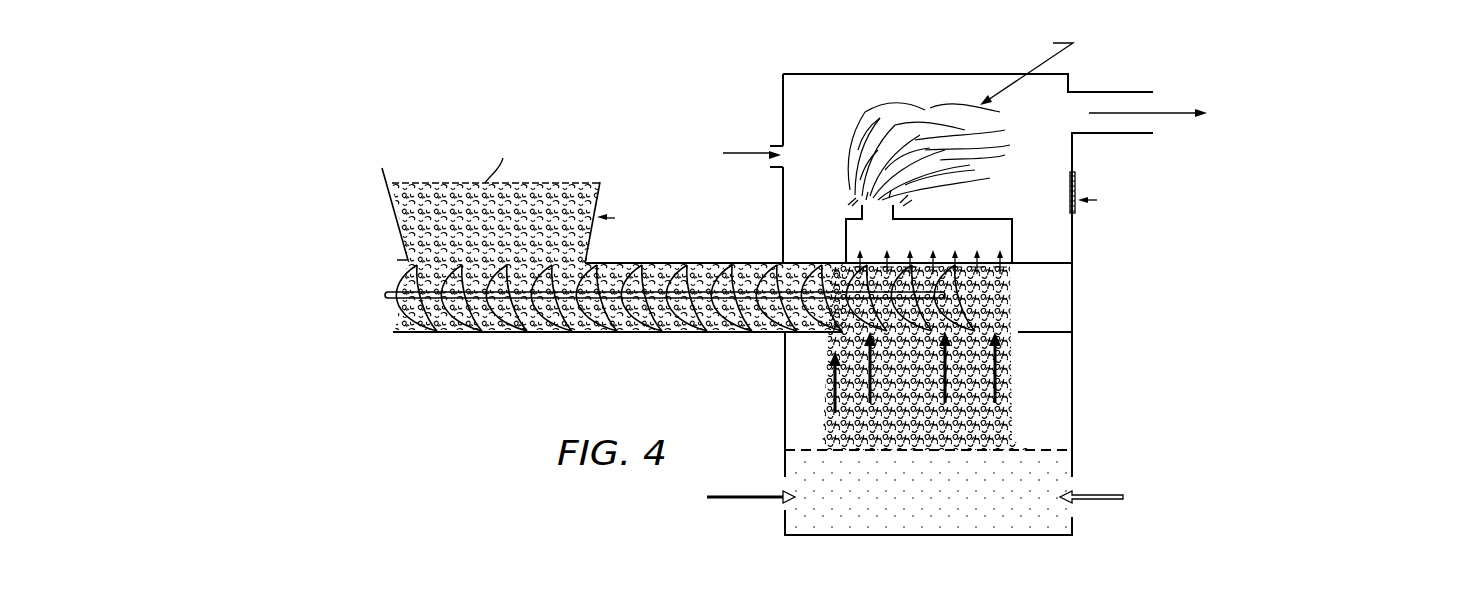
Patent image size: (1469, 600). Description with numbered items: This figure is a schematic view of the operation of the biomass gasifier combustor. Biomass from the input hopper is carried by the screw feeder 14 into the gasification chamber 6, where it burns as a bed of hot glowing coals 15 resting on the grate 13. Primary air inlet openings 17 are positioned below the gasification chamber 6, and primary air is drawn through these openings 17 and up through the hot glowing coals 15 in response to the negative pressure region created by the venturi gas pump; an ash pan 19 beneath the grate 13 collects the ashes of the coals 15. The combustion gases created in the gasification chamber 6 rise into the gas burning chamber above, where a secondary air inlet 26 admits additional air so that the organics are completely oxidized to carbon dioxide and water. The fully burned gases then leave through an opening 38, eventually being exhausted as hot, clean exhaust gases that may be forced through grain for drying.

The gasification chamber 6 is at (1052, 298).
The grate 13 is at (1030, 448).
The screw feeder 14 is at (607, 333).
The hot glowing coals 15 is at (1003, 423).
The primary air inlet openings 17 is at (733, 498).
The ash pan 19 is at (903, 527).
The secondary air inlet 26 is at (743, 153).
The opening 38 is at (1137, 120).